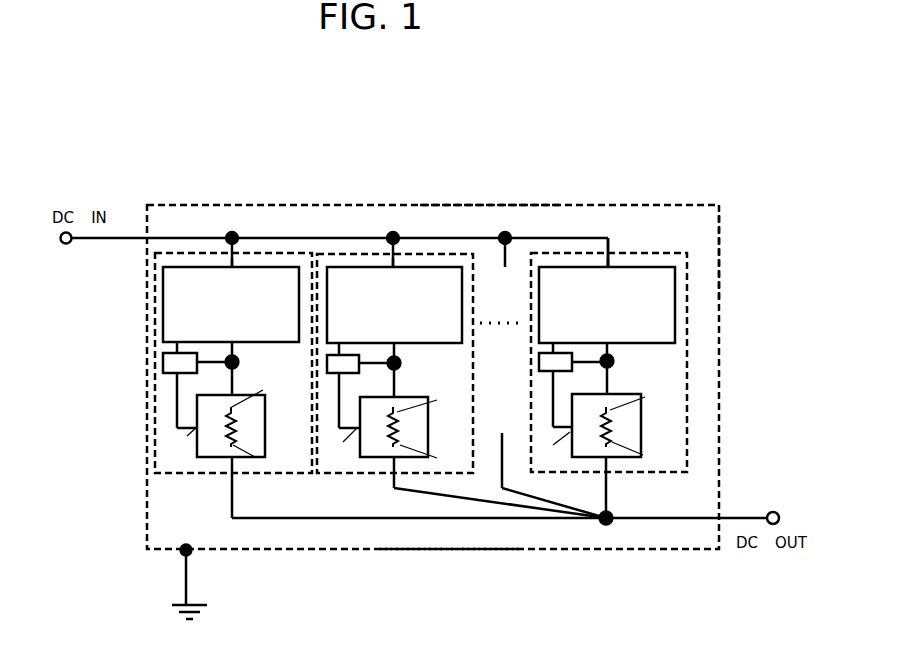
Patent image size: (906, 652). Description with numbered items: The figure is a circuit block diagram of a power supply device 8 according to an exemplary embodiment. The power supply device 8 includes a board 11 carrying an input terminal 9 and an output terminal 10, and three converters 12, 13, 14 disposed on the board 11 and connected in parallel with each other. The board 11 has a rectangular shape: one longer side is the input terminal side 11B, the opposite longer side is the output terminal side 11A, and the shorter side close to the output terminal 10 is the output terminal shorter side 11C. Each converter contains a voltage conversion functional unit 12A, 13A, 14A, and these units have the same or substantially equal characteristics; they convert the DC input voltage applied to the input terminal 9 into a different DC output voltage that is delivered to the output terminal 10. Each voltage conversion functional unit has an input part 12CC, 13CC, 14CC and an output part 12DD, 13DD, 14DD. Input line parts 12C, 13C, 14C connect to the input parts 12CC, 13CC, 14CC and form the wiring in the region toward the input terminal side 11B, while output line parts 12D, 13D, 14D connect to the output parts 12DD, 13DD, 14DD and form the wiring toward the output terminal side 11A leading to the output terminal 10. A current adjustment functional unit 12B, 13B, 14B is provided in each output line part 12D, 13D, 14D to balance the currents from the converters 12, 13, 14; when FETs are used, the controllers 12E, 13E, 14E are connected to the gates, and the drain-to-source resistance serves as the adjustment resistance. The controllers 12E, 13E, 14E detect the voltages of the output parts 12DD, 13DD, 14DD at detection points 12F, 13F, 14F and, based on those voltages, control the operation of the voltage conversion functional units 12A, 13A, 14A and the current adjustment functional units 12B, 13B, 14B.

The power supply device 8 is at (612, 125).
The input terminal 9 is at (63, 247).
The output terminal 10 is at (772, 507).
The board 11 is at (692, 203).
The output terminal side 11A is at (440, 552).
The input terminal side 11B is at (478, 205).
The output terminal shorter side 11C is at (720, 252).
The converter 12 is at (155, 282).
The voltage conversion functional unit 12A is at (240, 263).
The current adjustment functional unit 12B is at (195, 455).
The input line part 12C is at (232, 257).
The input part 12CC is at (230, 262).
The output line part 12D is at (233, 385).
The output part 12DD is at (230, 342).
The controller 12E is at (162, 367).
The detection point 12F is at (229, 366).
The converter 13 is at (423, 253).
The voltage conversion functional unit 13A is at (440, 265).
The current adjustment functional unit 13B is at (382, 458).
The input line part 13C is at (389, 263).
The input part 13CC is at (392, 270).
The output line part 13D is at (400, 382).
The output part 13DD is at (395, 343).
The controller 13E is at (329, 372).
The detection point 13F is at (403, 363).
The converter 14 is at (687, 252).
The voltage conversion functional unit 14A is at (645, 265).
The current adjustment functional unit 14B is at (593, 458).
The input line part 14C is at (603, 238).
The input part 14CC is at (607, 263).
The output line part 14D is at (610, 377).
The output part 14DD is at (607, 340).
The controller 14E is at (542, 372).
The detection point 14F is at (618, 361).